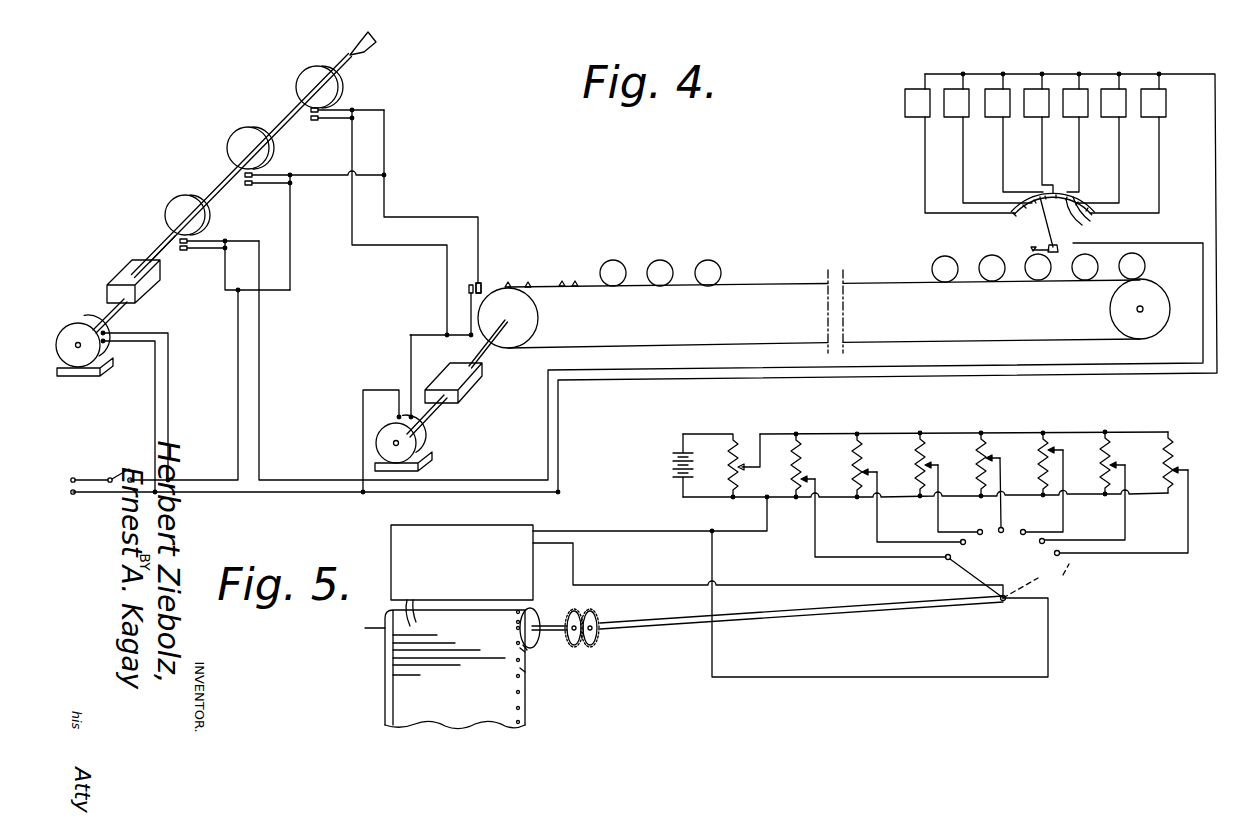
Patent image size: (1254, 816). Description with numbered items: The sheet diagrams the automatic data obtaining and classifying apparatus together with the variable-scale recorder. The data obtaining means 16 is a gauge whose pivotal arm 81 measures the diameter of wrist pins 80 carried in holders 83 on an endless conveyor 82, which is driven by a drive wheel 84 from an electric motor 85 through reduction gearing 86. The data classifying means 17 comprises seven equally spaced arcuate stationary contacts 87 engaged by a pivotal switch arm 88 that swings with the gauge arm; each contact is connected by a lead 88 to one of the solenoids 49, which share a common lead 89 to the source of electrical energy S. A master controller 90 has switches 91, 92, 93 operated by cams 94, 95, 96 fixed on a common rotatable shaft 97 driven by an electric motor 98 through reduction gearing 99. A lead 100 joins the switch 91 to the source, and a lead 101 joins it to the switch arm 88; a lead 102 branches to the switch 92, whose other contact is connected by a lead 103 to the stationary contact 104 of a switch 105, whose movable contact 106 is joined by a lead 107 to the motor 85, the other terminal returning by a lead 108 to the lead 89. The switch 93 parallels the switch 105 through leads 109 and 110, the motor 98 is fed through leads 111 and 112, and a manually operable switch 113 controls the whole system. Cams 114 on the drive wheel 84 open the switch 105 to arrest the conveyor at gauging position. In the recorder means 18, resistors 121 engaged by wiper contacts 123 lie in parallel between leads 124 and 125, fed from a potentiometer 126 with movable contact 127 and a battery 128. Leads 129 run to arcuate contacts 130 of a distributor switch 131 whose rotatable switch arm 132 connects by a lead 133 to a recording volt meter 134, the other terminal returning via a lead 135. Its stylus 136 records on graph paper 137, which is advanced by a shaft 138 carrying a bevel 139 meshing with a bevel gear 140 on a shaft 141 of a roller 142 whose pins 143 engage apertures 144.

In FIG. 4, the data obtaining means 16 is at (1055, 285).
In FIG. 4, the data classifying means 17 is at (1016, 226).
In FIG. 5, the means for recording on a variable scale 18 is at (878, 690).
In FIG. 4, the solenoids 49 is at (1035, 94).
In FIG. 4, the wrist pins 80 is at (662, 261).
In FIG. 4, the pivotal arm 81 is at (1041, 250).
In FIG. 4, the endless conveyor 82 is at (893, 284).
In FIG. 4, the holders 83 is at (530, 284).
In FIG. 4, the drive wheel 84 is at (530, 328).
In FIG. 4, the electric motor 85 is at (418, 437).
In FIG. 4, the reduction gearing 86 is at (465, 385).
In FIG. 4, the stationary contacts 87 is at (1082, 208).
In FIG. 4, the pivotal switch arm 88 is at (927, 170).
In FIG. 4, the common lead 89 is at (1215, 176).
In FIG. 4, the master controller 90 is at (155, 178).
In FIG. 4, the switch 91 is at (205, 251).
In FIG. 4, the switch 92 is at (262, 186).
In FIG. 4, the switch 93 is at (323, 121).
In FIG. 4, the cam 94 is at (184, 196).
In FIG. 4, the cam 95 is at (244, 128).
In FIG. 4, the cam 96 is at (309, 76).
In FIG. 4, the common rotatable shaft 97 is at (220, 185).
In FIG. 4, the electric motor 98 is at (84, 356).
In FIG. 4, the reduction gearing 99 is at (123, 268).
In FIG. 4, the lead 100 is at (228, 300).
In FIG. 4, the lead 101 is at (261, 378).
In FIG. 4, the lead 102 is at (292, 268).
In FIG. 4, the lead 103 is at (386, 172).
In FIG. 4, the stationary contact 104 is at (483, 285).
In FIG. 4, the switch 105 is at (476, 283).
In FIG. 4, the movable contact 106 is at (468, 289).
In FIG. 4, the lead 107 is at (411, 355).
In FIG. 4, the lead 108 is at (363, 422).
In FIG. 4, the lead 109 is at (386, 110).
In FIG. 4, the lead 110 is at (378, 250).
In FIG. 4, the lead 111 is at (155, 425).
In FIG. 4, the lead 112 is at (170, 430).
In FIG. 4, the manually operable switch 113 is at (126, 477).
In FIG. 4, the source of electrical energy S is at (72, 485).
In FIG. 4, the cams 114 is at (540, 318).
In FIG. 5, the resistors 121 is at (855, 440).
In FIG. 5, the wiper contacts 123 is at (804, 478).
In FIG. 5, the lead 124 is at (1148, 495).
In FIG. 5, the lead 125 is at (1135, 432).
In FIG. 5, the potentiometer 126 is at (729, 443).
In FIG. 5, the movable contact 127 is at (745, 462).
In FIG. 5, the battery 128 is at (672, 460).
In FIG. 5, the leads 129 is at (819, 530).
In FIG. 5, the arcuate contacts 130 is at (1058, 557).
In FIG. 5, the distributor switch 131 is at (934, 564).
In FIG. 5, the rotatable switch arm 132 is at (978, 583).
In FIG. 5, the lead 133 is at (760, 585).
In FIG. 5, the recording volt meter 134 is at (440, 569).
In FIG. 5, the lead 135 is at (633, 531).
In FIG. 5, the stylus 136 is at (420, 614).
In FIG. 5, the graph paper 137 is at (412, 696).
In FIG. 5, the shaft 138 is at (688, 624).
In FIG. 5, the bevel 139 is at (599, 619).
In FIG. 5, the bevel gear 140 is at (578, 641).
In FIG. 5, the shaft 141 is at (550, 625).
In FIG. 5, the roller 142 is at (537, 607).
In FIG. 5, the pins 143 is at (526, 671).
In FIG. 5, the apertures 144 is at (523, 722).